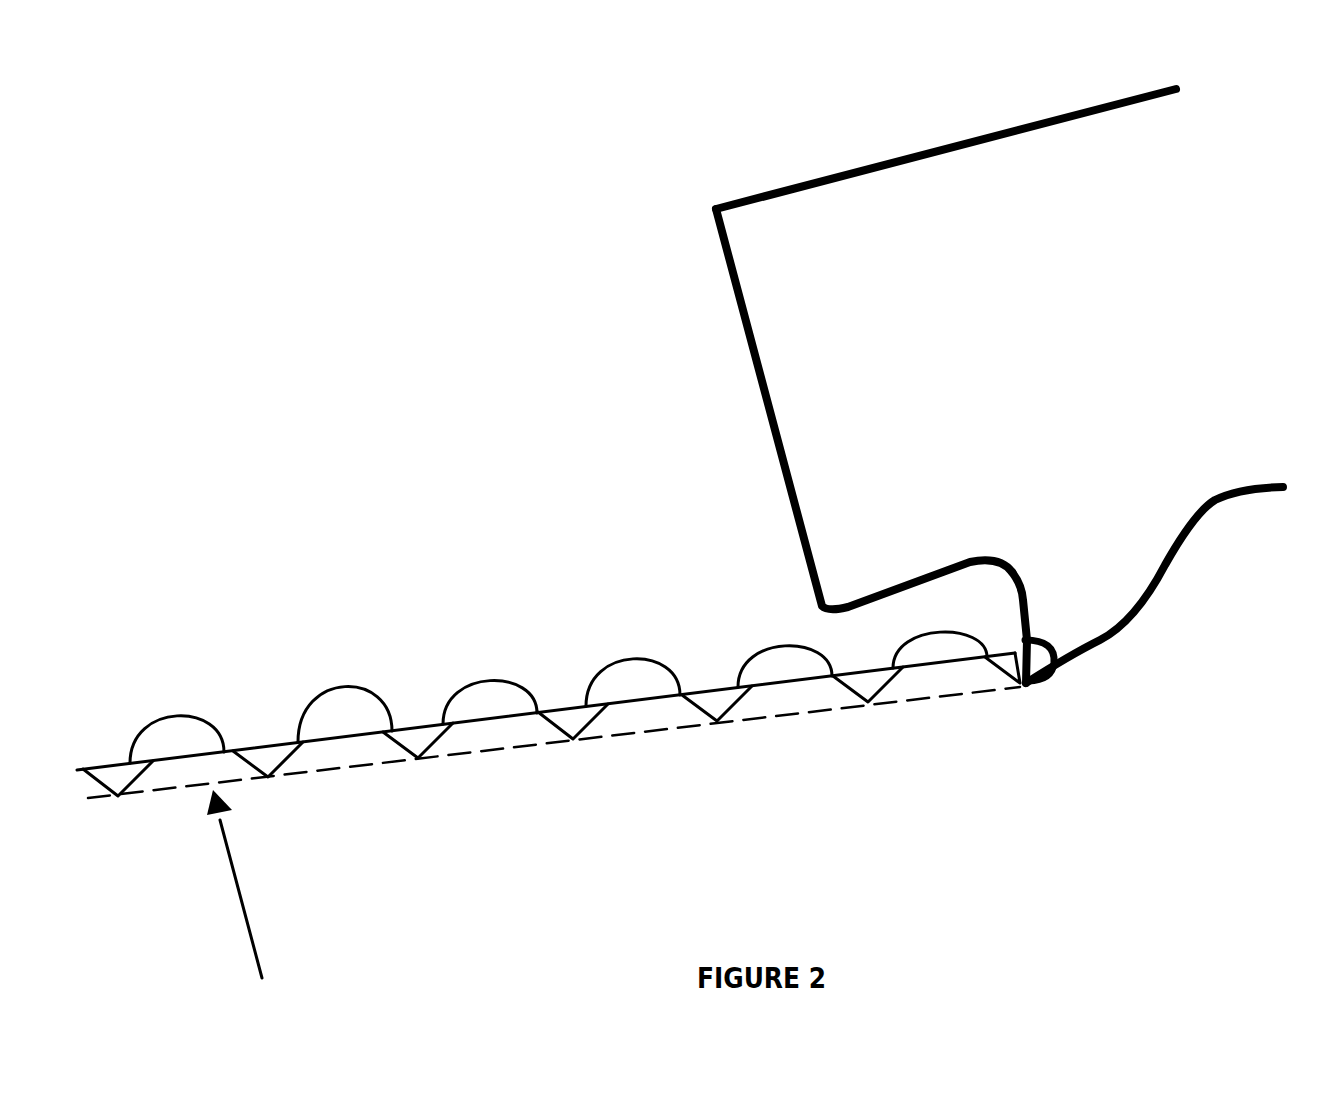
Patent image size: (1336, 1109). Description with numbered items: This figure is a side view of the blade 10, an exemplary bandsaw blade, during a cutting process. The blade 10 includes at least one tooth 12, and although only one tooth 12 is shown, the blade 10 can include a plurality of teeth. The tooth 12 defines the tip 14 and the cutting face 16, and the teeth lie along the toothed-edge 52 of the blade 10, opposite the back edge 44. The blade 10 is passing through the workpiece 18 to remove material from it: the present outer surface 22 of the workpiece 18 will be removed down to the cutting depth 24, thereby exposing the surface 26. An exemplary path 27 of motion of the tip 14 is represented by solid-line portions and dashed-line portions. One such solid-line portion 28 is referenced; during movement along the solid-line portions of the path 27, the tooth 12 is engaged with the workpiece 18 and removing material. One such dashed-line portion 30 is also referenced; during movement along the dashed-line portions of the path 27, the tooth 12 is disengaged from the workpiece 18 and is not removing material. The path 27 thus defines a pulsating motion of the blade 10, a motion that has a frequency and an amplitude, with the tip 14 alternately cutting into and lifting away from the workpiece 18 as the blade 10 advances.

The blade 10 is at (873, 336).
The back edge 44 is at (845, 172).
The cutting face 16 is at (1017, 603).
The tip 14 is at (1023, 683).
The tooth 12 is at (1080, 604).
The toothed-edge 52 is at (1160, 625).
The workpiece 18 is at (806, 817).
The present outer surface 22 is at (546, 632).
The cutting depth 24 is at (190, 725).
The dashed-line portion 30 is at (355, 655).
The surface 26 is at (407, 782).
The solid-line portion 28 is at (590, 760).
The path 27 is at (551, 619).